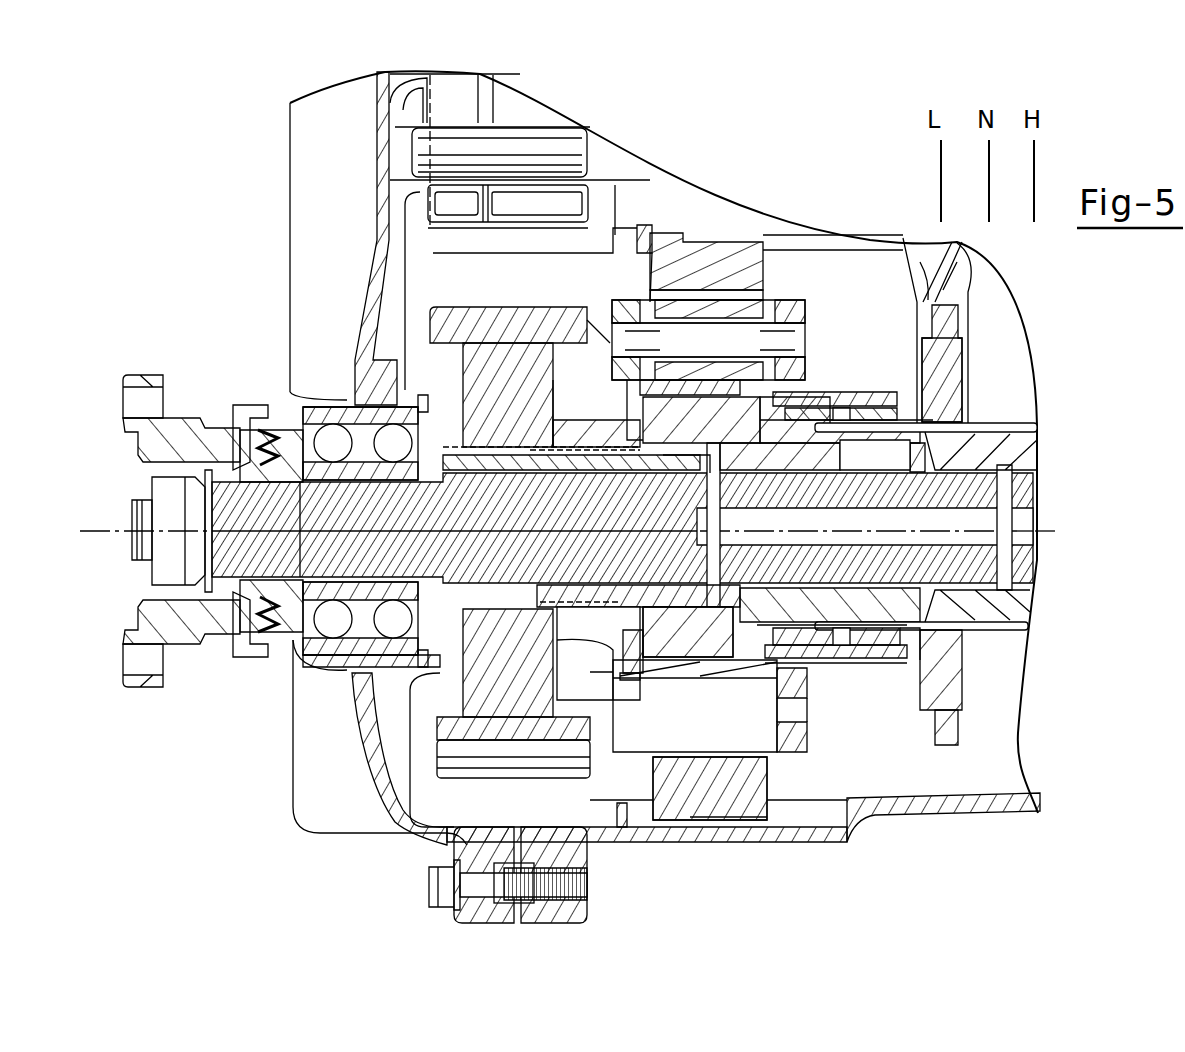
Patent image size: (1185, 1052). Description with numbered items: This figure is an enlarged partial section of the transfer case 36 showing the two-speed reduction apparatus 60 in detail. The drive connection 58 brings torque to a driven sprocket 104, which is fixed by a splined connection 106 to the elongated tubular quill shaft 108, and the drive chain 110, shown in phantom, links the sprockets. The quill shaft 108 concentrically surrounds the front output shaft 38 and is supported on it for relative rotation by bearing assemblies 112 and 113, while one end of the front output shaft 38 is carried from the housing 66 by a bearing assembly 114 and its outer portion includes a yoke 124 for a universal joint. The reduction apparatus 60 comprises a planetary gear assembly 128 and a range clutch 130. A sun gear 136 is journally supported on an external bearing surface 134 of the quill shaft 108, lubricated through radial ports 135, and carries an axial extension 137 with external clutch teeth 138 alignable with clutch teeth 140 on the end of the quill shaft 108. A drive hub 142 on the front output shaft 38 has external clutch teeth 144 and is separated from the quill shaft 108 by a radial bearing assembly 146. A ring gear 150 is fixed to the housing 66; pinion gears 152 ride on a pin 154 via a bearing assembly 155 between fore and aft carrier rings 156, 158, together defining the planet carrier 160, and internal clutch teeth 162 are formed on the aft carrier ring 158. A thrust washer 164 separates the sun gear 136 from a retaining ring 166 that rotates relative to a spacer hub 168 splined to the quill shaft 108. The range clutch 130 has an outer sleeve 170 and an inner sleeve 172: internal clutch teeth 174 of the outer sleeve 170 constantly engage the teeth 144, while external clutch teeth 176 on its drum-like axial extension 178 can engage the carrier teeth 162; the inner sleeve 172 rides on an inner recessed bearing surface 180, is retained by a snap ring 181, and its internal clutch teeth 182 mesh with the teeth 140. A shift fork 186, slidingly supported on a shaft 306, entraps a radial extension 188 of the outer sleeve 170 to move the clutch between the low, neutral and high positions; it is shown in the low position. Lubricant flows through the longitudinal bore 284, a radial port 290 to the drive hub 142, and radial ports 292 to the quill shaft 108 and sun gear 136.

The transfer case 36 is at (812, 163).
The front output shaft 38 is at (1030, 575).
The drive connection 58 is at (425, 320).
The two-speed reduction apparatus 60 is at (802, 265).
The housing 66 is at (930, 812).
The driven sprocket 104 is at (490, 713).
The splined connection 106 is at (548, 608).
The quill shaft 108 is at (628, 460).
The drive chain 110 is at (455, 255).
The bearing assembly 112 is at (622, 528).
The bearing assembly 113 is at (898, 483).
The bearing assembly 114 is at (278, 650).
The yoke 124 is at (178, 662).
The planetary gear assembly 128 is at (823, 313).
The range clutch 130 is at (832, 684).
The external bearing surface 134 is at (872, 474).
The radial ports 135 is at (608, 445).
The sun gear 136 is at (732, 648).
The axial extension 137 is at (790, 605).
The clutch teeth 138 is at (830, 451).
The clutch teeth 140 is at (905, 440).
The drive hub 142 is at (1027, 447).
The external clutch teeth 144 is at (997, 425).
The radial bearing assembly 146 is at (1000, 660).
The ring gear 150 is at (673, 805).
The pinion gears 152 is at (720, 317).
The pin 154 is at (748, 354).
The bearing assembly 155 is at (683, 320).
The fore carrier ring 156 is at (687, 305).
The aft carrier ring 158 is at (795, 740).
The planet carrier 160 is at (630, 745).
The internal clutch teeth 162 is at (795, 672).
The thrust washer 164 is at (632, 425).
The retaining ring 166 is at (647, 405).
The spacer hub 168 is at (571, 484).
The outer sleeve 170 is at (962, 683).
The inner sleeve 172 is at (880, 670).
The internal clutch teeth 174 is at (963, 395).
The external clutch teeth 176 is at (890, 665).
The axial extension 178 is at (905, 427).
The inner recessed bearing surface 180 is at (862, 425).
The snap ring 181 is at (790, 480).
The internal clutch teeth 182 is at (833, 433).
The shift fork 186 is at (963, 322).
The radial extension 188 is at (950, 723).
The longitudinal bore 284 is at (1036, 521).
The radial port 290 is at (1008, 480).
The radial ports 292 is at (710, 560).
The shaft 306 is at (625, 172).